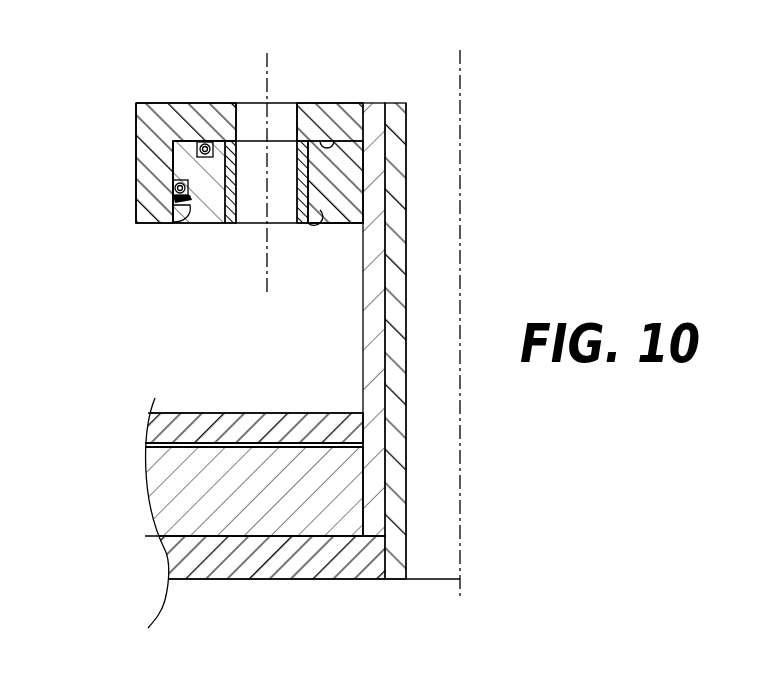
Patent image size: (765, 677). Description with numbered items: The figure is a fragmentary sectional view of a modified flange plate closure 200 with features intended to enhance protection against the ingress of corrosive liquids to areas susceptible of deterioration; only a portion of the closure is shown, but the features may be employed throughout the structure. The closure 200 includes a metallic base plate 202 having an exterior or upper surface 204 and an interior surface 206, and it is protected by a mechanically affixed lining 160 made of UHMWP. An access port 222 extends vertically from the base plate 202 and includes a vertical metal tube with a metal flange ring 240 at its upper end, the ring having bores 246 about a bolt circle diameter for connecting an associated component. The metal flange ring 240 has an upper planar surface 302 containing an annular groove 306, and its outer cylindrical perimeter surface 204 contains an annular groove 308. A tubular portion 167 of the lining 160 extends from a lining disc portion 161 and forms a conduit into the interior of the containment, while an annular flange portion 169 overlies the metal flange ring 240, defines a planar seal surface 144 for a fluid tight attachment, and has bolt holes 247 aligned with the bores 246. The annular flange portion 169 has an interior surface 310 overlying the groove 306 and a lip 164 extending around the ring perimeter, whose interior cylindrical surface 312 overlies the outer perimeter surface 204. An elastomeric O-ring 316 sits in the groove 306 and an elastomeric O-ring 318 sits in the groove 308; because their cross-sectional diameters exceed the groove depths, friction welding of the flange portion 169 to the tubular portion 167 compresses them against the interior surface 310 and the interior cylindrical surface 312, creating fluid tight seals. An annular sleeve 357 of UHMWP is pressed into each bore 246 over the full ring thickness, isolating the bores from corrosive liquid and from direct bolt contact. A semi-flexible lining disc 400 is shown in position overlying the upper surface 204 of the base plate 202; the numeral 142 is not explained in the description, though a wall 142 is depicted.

The planar seal surface 144 is at (158, 103).
The annular flange portion 169 is at (190, 103).
The elastomeric O-ring 316 is at (208, 138).
The bolt holes 247 is at (250, 120).
The upper planar surface 302 is at (345, 120).
The interior surface 310 is at (325, 137).
The lining 160 is at (374, 96).
The access port 222 is at (435, 96).
The annular groove 306 is at (137, 105).
The upper surface 204 is at (173, 160).
The elastomeric O-ring 318 is at (172, 190).
The lip 164 is at (172, 195).
The annular groove 308 is at (172, 203).
The interior cylindrical surface 312 is at (160, 213).
The metal flange ring 240 is at (197, 215).
The bores 246 is at (297, 197).
The annular sleeve 357 is at (312, 210).
The inner wall 142 is at (363, 316).
The tubular portion 167 is at (400, 420).
The flange plate closure 200 is at (300, 492).
The semi-flexible lining disc 400 is at (253, 418).
The metallic base plate 202 is at (223, 517).
The interior surface 206 is at (265, 545).
The lining disc portion 161 is at (303, 560).